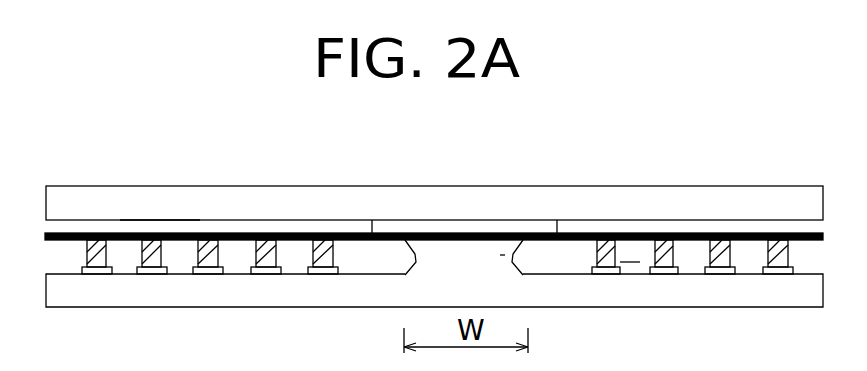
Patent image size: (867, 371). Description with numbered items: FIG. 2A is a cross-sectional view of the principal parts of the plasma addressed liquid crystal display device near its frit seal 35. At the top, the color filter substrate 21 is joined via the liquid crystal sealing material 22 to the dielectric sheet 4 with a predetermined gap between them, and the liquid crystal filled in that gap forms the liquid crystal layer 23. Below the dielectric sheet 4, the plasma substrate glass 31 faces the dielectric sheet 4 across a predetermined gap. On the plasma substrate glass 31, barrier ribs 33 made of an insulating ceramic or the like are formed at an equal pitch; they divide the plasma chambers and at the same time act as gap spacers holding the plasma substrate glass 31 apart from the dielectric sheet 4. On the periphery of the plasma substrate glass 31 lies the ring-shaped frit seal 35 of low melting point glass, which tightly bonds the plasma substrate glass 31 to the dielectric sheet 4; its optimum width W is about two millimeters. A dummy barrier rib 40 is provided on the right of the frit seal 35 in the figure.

The dielectric sheet 4 is at (53, 243).
The color filter substrate 21 is at (260, 208).
The liquid crystal sealing material 22 is at (542, 230).
The liquid crystal layer 23 is at (137, 227).
The plasma substrate glass 31 is at (283, 283).
The barrier ribs 33 is at (158, 257).
The frit seal 35 is at (502, 258).
The dummy barrier rib 40 is at (613, 260).